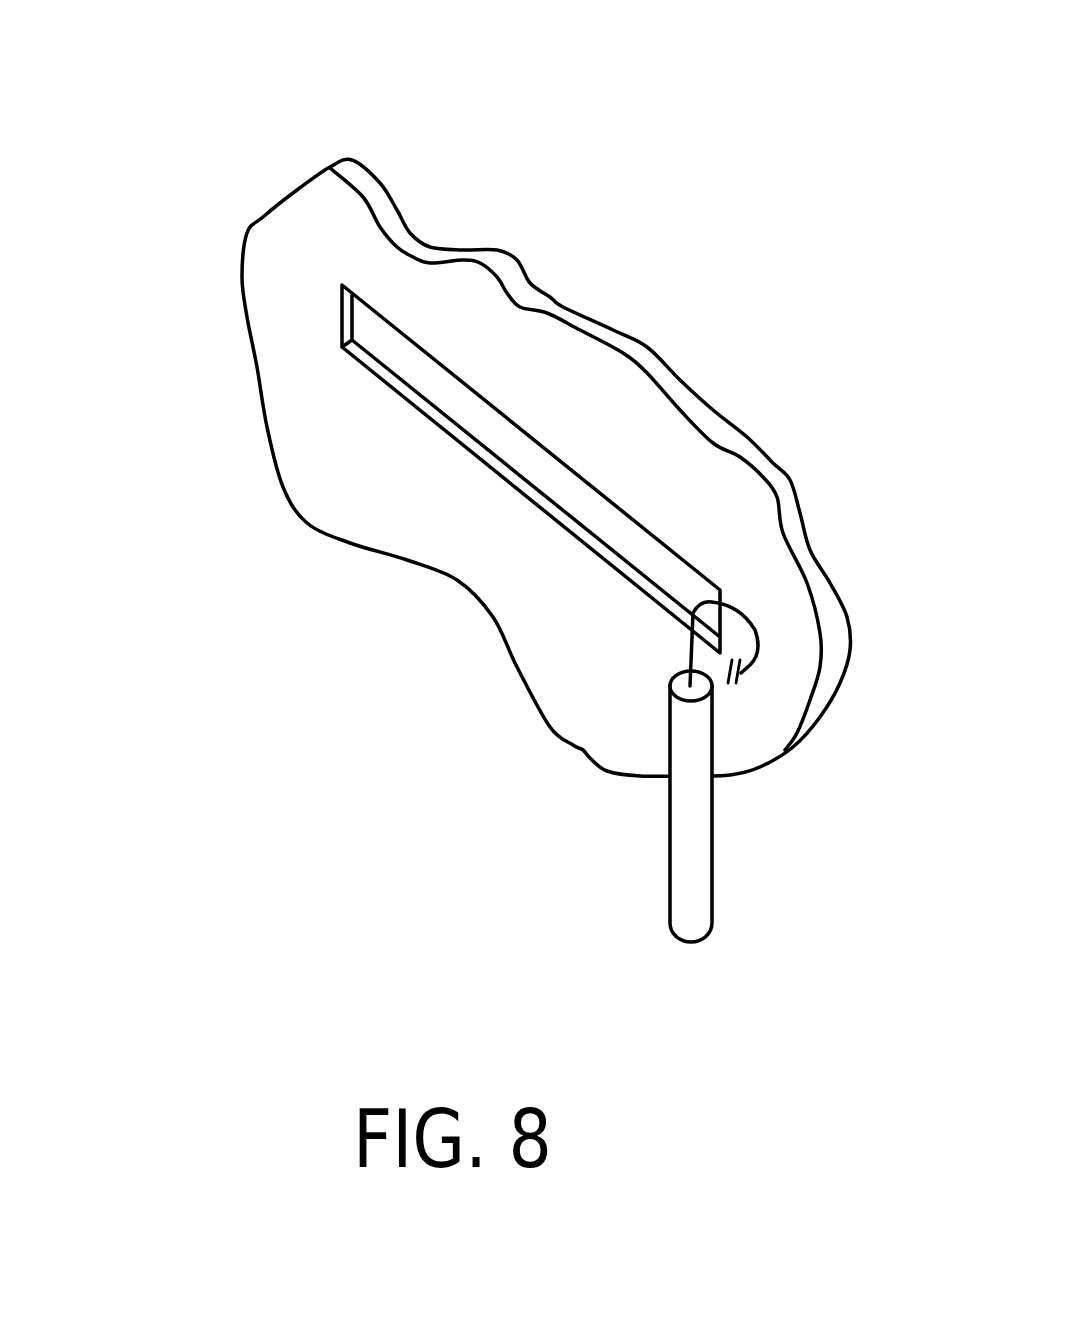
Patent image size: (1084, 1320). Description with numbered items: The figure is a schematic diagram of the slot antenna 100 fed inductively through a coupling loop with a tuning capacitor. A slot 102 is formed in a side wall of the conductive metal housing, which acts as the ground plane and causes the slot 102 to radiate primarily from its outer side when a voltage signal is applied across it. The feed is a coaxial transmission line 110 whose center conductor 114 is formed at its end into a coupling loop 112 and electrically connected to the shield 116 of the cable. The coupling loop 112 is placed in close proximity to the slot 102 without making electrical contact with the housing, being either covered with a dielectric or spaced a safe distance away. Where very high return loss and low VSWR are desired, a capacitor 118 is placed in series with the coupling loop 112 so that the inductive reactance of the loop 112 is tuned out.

The slot antenna 100 is at (676, 92).
The slot 102 is at (388, 386).
The coaxial transmission line 110 is at (695, 837).
The coupling loop 112 is at (738, 612).
The center conductor 114 is at (689, 688).
The shield 116 is at (690, 648).
The capacitor 118 is at (741, 681).